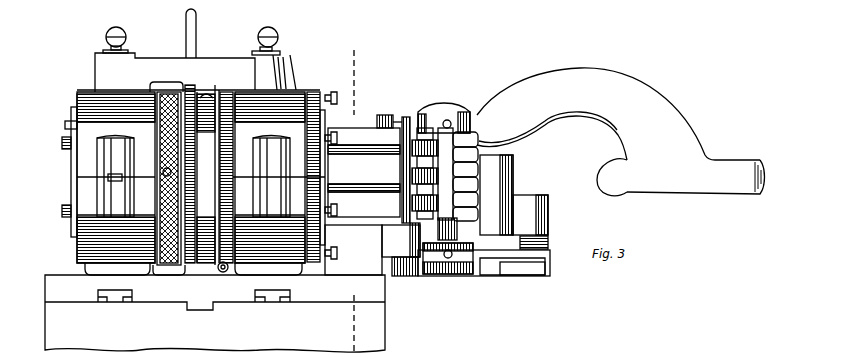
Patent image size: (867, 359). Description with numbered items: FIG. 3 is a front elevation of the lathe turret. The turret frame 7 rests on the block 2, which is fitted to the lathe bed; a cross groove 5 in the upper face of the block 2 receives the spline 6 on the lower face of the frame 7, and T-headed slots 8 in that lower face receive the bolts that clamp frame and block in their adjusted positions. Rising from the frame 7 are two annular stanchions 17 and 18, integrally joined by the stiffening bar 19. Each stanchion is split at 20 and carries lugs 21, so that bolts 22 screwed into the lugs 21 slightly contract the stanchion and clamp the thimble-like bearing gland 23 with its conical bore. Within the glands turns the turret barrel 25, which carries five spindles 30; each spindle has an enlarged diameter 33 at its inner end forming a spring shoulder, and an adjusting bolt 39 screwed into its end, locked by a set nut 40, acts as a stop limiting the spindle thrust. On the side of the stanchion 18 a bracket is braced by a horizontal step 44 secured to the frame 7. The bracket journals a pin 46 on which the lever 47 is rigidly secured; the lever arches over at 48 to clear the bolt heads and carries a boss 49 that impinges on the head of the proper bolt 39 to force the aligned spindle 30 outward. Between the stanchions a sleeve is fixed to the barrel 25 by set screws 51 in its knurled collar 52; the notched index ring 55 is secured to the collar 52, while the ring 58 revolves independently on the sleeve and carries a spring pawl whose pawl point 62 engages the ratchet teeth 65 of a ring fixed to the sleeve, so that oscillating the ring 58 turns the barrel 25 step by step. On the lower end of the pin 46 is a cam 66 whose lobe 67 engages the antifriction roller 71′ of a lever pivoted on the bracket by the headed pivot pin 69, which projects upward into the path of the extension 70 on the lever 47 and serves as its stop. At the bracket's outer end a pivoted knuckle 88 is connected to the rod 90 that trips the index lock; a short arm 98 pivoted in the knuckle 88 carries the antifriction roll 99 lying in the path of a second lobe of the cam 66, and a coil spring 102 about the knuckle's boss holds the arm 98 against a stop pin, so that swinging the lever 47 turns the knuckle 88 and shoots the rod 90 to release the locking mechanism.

The block 2 is at (385, 323).
The cross groove 5 is at (209, 308).
The spline 6 is at (200, 304).
The turret frame 7 is at (57, 279).
The T-headed slots 8 is at (118, 292).
The annular stanchion 17 is at (87, 91).
The annular stanchion 18 is at (302, 90).
The stiffening bar 19 is at (153, 58).
The split 20 is at (83, 179).
The lugs 21 is at (138, 169).
The bolts 22 is at (115, 137).
The bearing gland 23 is at (77, 110).
The turret barrel 25 is at (65, 125).
The spindles 30 is at (62, 143).
The enlarged diameter 33 is at (364, 172).
The adjusting bolt 39 is at (478, 160).
The set nuts 40 is at (401, 240).
The step 44 is at (353, 250).
The pin 46 is at (450, 106).
The lever 47 is at (621, 131).
The arch 48 is at (580, 119).
The boss 49 is at (612, 177).
The set screws 51 is at (165, 175).
The knurled collar 52 is at (165, 90).
The notched index ring 55 is at (189, 90).
The ring 58 is at (205, 184).
The pawl point 62 is at (214, 132).
The ratchet teeth 65 is at (223, 90).
The cam 66 is at (423, 278).
The cam lobe 67 is at (418, 279).
The headed pivot pin 69 is at (385, 114).
The extension 70 is at (403, 117).
The antifriction roller 71′ is at (396, 278).
The knuckle 88 is at (548, 202).
The rod 90 is at (486, 208).
The short arm 98 is at (522, 272).
The antifriction roll 99 is at (485, 268).
The coil spring 102 is at (548, 242).